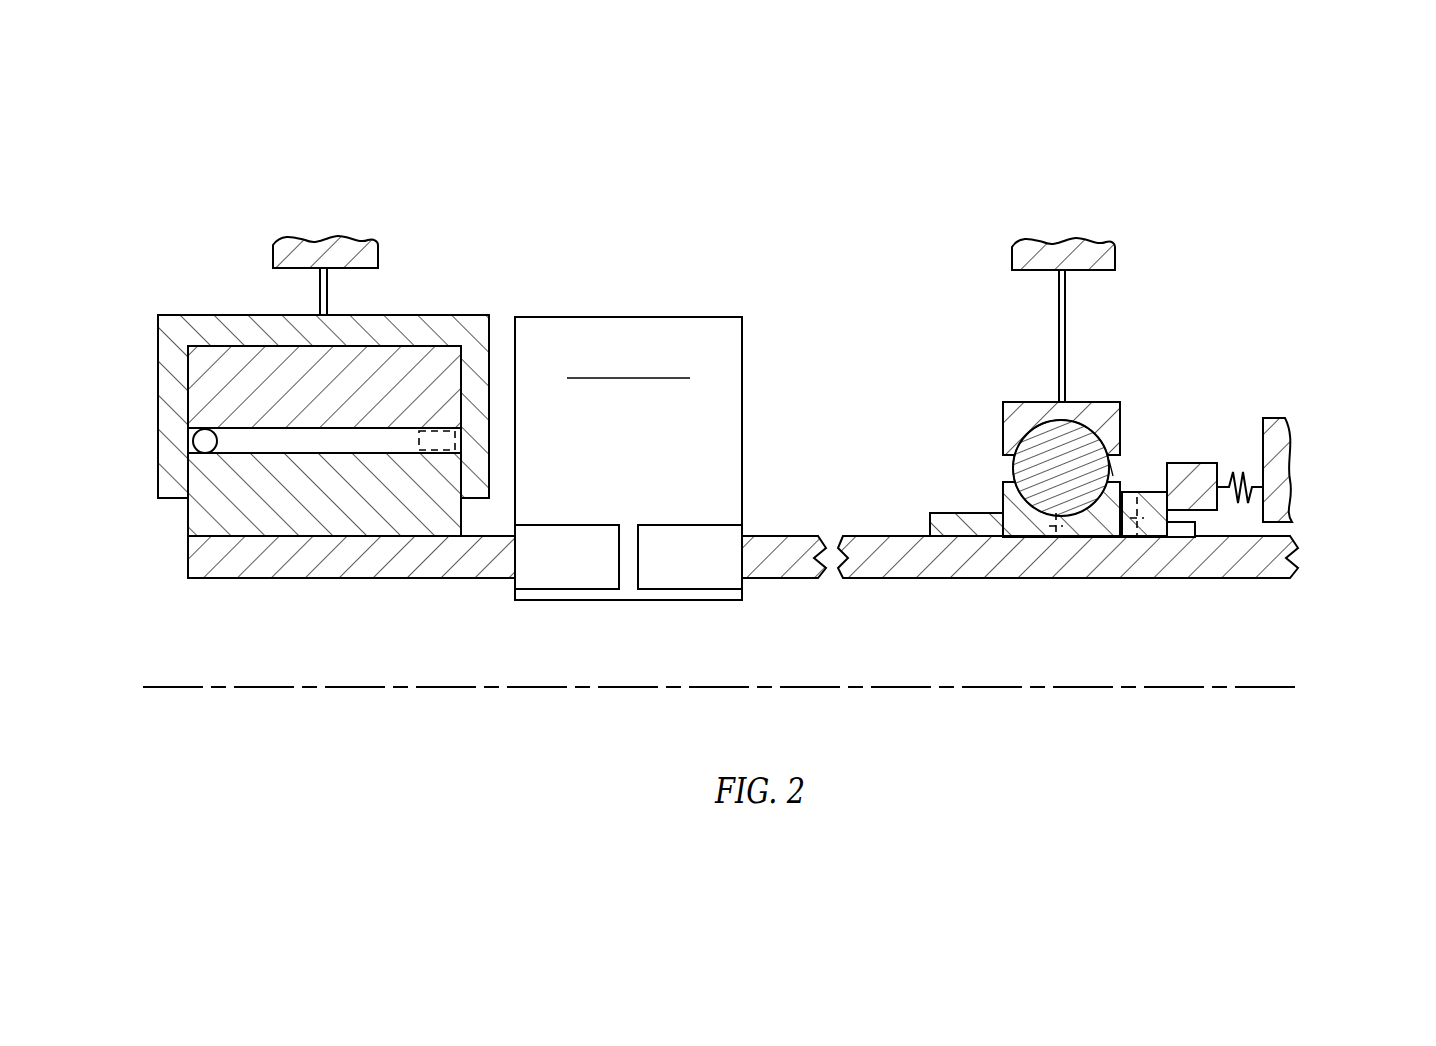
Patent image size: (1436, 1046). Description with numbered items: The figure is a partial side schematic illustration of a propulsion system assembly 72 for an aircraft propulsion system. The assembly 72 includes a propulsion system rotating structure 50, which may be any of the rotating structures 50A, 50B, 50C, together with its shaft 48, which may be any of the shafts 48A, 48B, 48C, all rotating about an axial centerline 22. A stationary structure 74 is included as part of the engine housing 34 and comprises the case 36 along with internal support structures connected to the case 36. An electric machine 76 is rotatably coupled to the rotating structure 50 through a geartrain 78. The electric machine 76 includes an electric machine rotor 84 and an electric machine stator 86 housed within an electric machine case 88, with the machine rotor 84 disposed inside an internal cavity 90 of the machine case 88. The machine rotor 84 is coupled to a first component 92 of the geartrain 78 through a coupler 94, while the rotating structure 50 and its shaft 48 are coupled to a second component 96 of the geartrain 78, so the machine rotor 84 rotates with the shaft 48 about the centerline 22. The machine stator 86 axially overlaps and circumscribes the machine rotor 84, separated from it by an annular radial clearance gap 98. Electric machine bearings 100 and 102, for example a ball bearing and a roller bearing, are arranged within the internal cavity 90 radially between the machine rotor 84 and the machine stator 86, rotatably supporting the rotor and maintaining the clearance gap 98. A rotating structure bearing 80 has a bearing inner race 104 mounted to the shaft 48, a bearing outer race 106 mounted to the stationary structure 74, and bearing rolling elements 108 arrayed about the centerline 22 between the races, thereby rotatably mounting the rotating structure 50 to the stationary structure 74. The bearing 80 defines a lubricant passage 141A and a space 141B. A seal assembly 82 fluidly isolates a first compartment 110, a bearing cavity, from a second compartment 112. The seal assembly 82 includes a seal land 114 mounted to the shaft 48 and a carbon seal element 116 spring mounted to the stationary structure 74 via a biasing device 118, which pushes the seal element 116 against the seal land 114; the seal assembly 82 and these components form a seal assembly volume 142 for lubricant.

The axial centerline 22 is at (156, 688).
The engine housing 34 is at (824, 336).
The case 36 is at (824, 336).
The stationary structure 74 is at (353, 235).
The shaft 48 is at (1124, 608).
The shaft 48A is at (1124, 608).
The shaft 48B is at (1124, 608).
The shaft 48C is at (1124, 608).
The propulsion system rotating structure 50 is at (1055, 608).
The propulsion system rotating structure 50A is at (1055, 608).
The propulsion system rotating structure 50B is at (1055, 608).
The propulsion system rotating structure 50C is at (892, 582).
The propulsion system assembly 72 is at (445, 388).
The electric machine 76 is at (277, 399).
The geartrain 78 is at (658, 445).
The rotating structure bearing 80 is at (1037, 511).
The seal assembly 82 is at (1138, 518).
The electric machine rotor 84 is at (182, 517).
The electric machine stator 86 is at (223, 340).
The electric machine case 88 is at (157, 392).
The internal cavity 90 is at (324, 404).
The first component 92 is at (597, 590).
The coupler 94 is at (198, 583).
The second component 96 is at (662, 590).
The radial clearance gap 98 is at (292, 443).
The electric machine bearing 100 is at (190, 438).
The electric machine bearing 102 is at (435, 452).
The bearing inner race 104 is at (1095, 538).
The bearing outer race 106 is at (1003, 410).
The bearing rolling elements 108 is at (1012, 465).
The first compartment 110 is at (1095, 474).
The second compartment 112 is at (1227, 520).
The seal land 114 is at (1155, 537).
The seal element 116 is at (1212, 463).
The biasing device 118 is at (1238, 500).
The passage 141A is at (1045, 525).
The space 141B is at (1113, 468).
The seal assembly volume 142 is at (1120, 537).